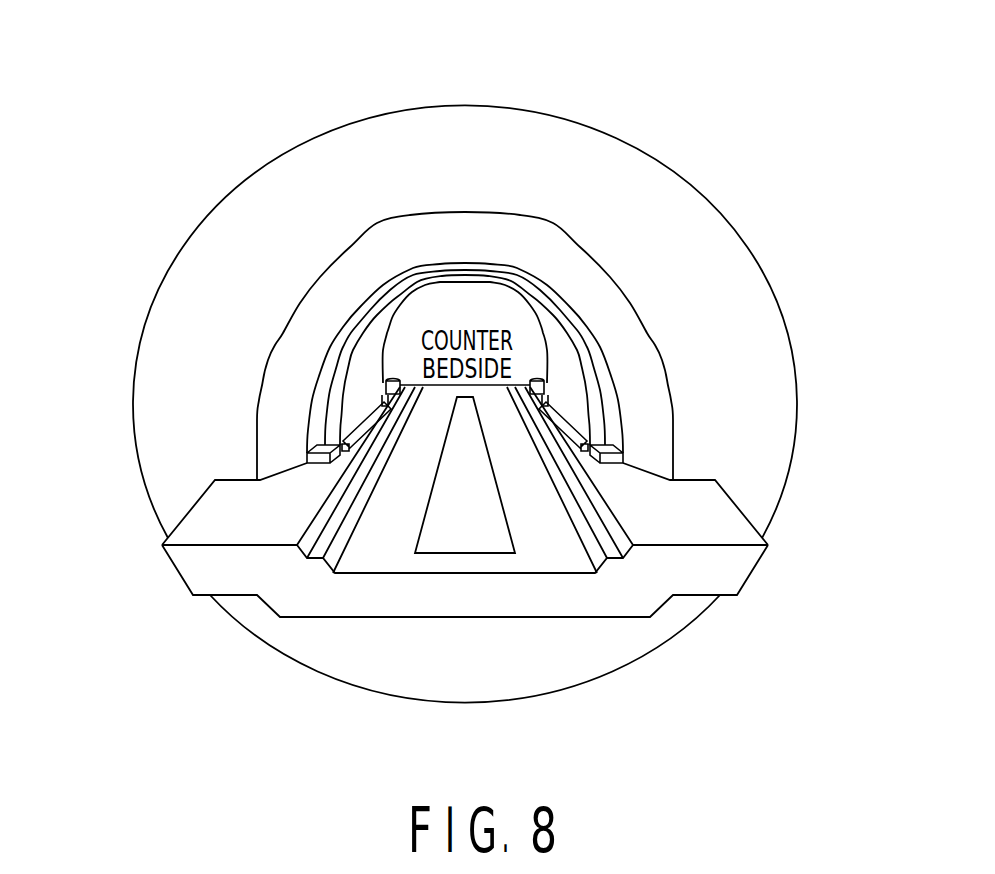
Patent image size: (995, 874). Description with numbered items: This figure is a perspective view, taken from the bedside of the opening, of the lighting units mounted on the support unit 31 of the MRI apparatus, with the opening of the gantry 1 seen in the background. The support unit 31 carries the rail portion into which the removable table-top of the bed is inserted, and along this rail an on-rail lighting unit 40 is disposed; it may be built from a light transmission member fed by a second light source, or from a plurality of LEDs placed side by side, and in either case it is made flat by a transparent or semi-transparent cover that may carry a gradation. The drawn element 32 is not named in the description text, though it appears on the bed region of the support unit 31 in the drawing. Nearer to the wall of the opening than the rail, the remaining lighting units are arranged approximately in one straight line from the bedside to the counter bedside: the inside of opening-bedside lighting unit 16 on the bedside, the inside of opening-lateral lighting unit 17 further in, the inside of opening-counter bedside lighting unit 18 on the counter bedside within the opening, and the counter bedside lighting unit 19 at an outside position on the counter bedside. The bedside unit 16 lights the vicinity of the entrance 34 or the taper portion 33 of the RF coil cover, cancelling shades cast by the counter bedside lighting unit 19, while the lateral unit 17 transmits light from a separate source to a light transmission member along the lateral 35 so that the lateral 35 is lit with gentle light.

The gantry 1 is at (648, 108).
The inside of opening-bedside lighting unit 16 is at (322, 452).
The inside of opening-lateral lighting unit 17 is at (350, 427).
The inside of opening-counter bedside lighting unit 18 is at (388, 382).
The counter bedside lighting unit 19 is at (380, 373).
The support unit 31 is at (203, 525).
The bed table 32 is at (397, 548).
The taper portion 33 is at (498, 278).
The entrance 34 is at (445, 245).
The lateral 35 is at (397, 312).
The on-rail lighting unit 40 is at (503, 540).